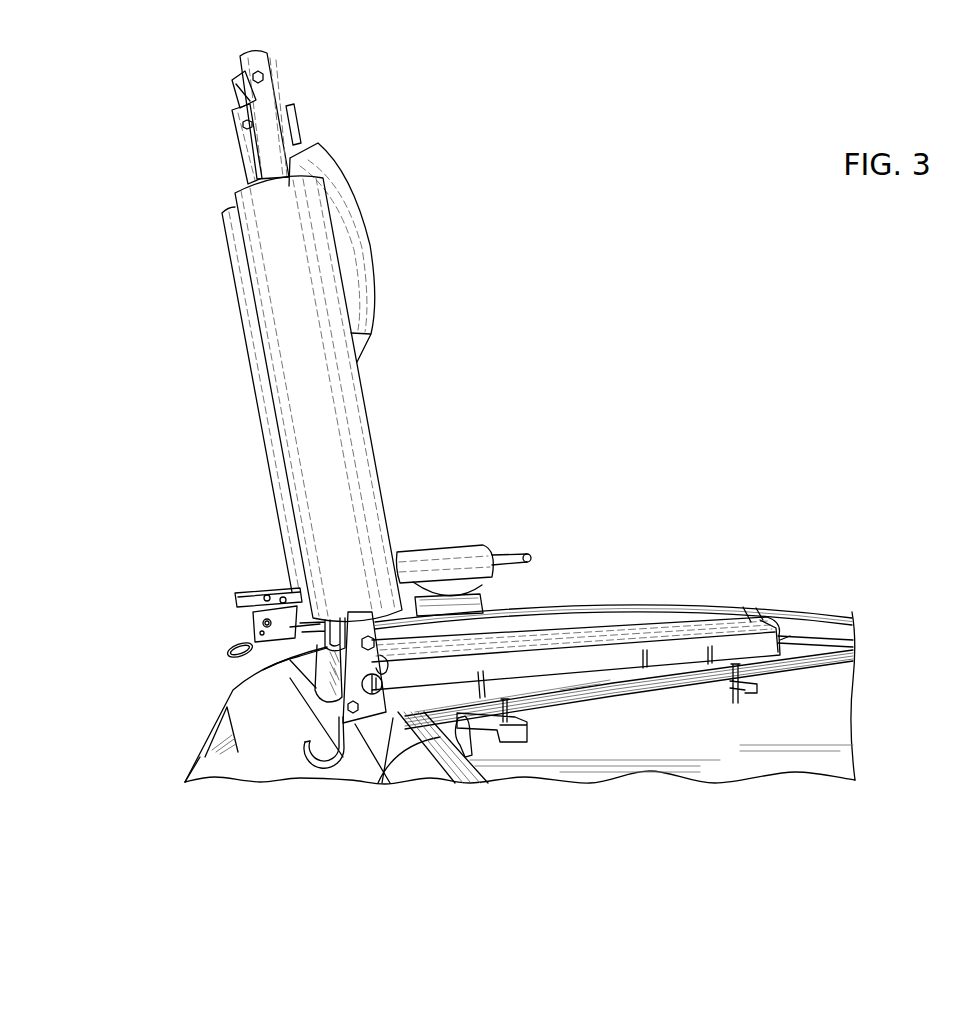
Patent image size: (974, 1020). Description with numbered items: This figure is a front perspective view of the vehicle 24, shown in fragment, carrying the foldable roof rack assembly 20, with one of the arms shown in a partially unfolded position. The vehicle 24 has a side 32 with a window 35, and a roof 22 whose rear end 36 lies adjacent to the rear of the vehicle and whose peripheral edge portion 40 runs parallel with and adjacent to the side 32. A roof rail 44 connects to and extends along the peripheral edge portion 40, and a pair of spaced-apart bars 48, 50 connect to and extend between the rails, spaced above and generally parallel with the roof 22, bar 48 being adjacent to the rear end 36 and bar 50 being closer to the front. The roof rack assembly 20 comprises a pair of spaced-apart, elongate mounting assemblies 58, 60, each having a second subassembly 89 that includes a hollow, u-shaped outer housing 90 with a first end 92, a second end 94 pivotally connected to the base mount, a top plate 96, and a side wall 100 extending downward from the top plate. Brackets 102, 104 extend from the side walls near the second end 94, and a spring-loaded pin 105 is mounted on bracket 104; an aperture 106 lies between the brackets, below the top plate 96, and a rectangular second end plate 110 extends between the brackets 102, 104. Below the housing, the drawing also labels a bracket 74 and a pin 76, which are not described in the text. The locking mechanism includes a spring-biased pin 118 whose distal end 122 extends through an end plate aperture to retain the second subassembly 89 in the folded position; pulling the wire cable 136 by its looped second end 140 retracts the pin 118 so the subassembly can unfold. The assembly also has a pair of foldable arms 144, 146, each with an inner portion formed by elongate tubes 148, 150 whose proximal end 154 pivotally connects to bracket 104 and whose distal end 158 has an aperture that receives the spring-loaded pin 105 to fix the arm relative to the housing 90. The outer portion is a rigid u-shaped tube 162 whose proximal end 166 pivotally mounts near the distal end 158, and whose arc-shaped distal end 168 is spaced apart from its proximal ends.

The foldable roof rack assembly 20 is at (417, 323).
The roof 22 is at (815, 735).
The vehicle 24 is at (200, 716).
The side 32 is at (245, 785).
The window 35 is at (222, 777).
The rear end 36 is at (272, 675).
The peripheral edge portion 40 is at (281, 687).
The roof rail 44 is at (393, 752).
The bar 48 is at (631, 605).
The bar 50 is at (815, 661).
The mounting assembly 58 is at (262, 644).
The mounting assembly 60 is at (579, 696).
The bracket 74 is at (521, 748).
The pin 76 is at (734, 702).
The second subassembly 89 is at (438, 710).
The outer housing 90 is at (718, 612).
The first end 92 is at (775, 622).
The second end 94 is at (332, 689).
The top plate 96 is at (657, 632).
The side wall 100 is at (598, 680).
The bracket 102 is at (302, 620).
The bracket 104 is at (325, 705).
The spring-loaded pin 105 is at (375, 698).
The aperture 106 is at (402, 652).
The second end plate 110 is at (330, 662).
The spring-biased pin 118 is at (789, 635).
The distal end 122 is at (856, 645).
The wire cable 136 is at (313, 780).
The second end 140 is at (328, 773).
The foldable arm 144 is at (533, 557).
The foldable arm 146 is at (375, 414).
The elongate tube 148 is at (257, 174).
The elongate tube 150 is at (265, 115).
The proximal end 154 is at (386, 662).
The distal end 158 is at (262, 62).
The u-shaped tube 162 is at (296, 138).
The proximal end 166 is at (240, 78).
The arc-shaped distal end 168 is at (364, 352).